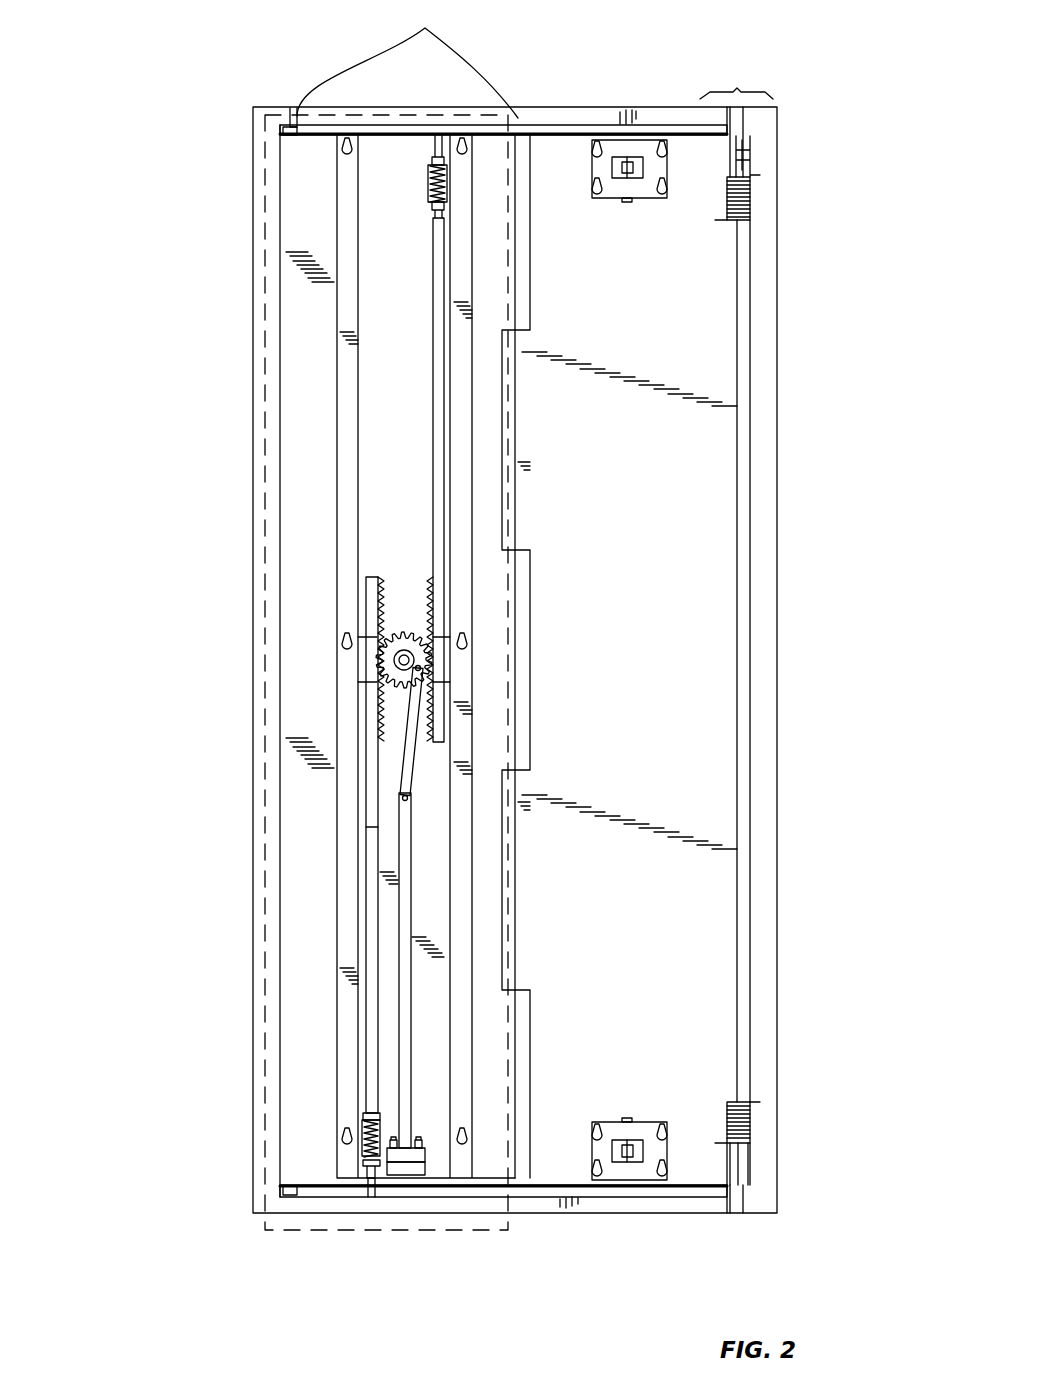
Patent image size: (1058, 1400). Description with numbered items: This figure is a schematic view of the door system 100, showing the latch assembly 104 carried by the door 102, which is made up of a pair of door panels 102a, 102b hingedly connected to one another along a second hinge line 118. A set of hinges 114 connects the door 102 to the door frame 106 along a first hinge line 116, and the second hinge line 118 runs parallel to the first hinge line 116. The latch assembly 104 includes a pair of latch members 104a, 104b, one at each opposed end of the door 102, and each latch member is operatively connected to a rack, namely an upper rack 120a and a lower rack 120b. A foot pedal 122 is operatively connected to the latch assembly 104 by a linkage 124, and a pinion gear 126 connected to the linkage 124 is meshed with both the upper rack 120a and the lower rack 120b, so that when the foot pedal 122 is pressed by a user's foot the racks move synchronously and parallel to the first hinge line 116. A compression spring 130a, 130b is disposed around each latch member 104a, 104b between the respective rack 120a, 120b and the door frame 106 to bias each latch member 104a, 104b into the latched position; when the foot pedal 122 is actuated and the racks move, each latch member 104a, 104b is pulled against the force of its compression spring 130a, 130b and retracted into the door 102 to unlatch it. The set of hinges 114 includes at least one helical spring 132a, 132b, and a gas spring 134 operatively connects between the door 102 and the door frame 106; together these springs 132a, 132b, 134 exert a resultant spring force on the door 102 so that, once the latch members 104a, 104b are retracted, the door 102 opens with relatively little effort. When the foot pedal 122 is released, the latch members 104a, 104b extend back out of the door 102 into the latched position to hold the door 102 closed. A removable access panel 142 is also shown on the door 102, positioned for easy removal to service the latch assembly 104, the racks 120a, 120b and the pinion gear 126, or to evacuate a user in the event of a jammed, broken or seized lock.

The door system 100 is at (111, 52).
The door 102 is at (588, 245).
The door panel 102a is at (683, 502).
The door panel 102b is at (310, 408).
The latch assembly 104 is at (330, 532).
The latch member 104a is at (433, 157).
The latch member 104b is at (363, 1163).
The door frame 106 is at (765, 608).
The set of hinges 114 is at (407, 59).
The first hinge line 116 is at (290, 178).
The second hinge line 118 is at (523, 222).
The upper rack 120a is at (437, 418).
The lower rack 120b is at (372, 938).
The foot pedal 122 is at (407, 1155).
The linkage 124 is at (407, 919).
The pinion gear 126 is at (400, 640).
The compression spring 130a is at (428, 185).
The compression spring 130b is at (363, 1135).
The helical spring 132a is at (752, 200).
The helical spring 132b is at (752, 1116).
The gas spring 134 is at (737, 88).
The removable access panel 142 is at (265, 778).